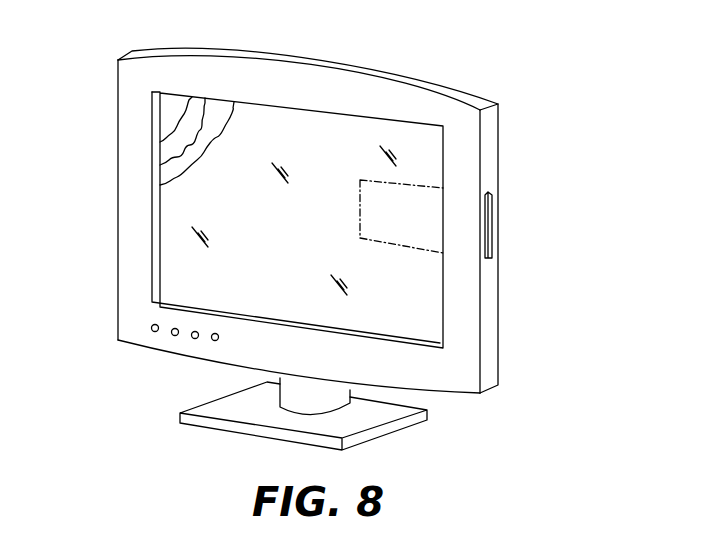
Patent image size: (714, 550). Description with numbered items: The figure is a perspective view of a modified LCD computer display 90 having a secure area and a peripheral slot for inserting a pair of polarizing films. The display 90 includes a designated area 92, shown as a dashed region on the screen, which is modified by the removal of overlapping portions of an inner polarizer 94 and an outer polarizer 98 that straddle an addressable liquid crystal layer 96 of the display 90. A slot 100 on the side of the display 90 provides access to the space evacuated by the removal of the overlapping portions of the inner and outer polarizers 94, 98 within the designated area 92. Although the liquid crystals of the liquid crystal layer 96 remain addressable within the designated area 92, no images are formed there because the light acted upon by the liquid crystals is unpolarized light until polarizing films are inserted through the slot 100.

The LCD computer display 90 is at (118, 210).
The designated area 92 is at (407, 185).
The inner polarizer 94 is at (200, 108).
The addressable liquid crystal layer 96 is at (220, 110).
The outer polarizer 98 is at (193, 293).
The slot 100 is at (491, 206).